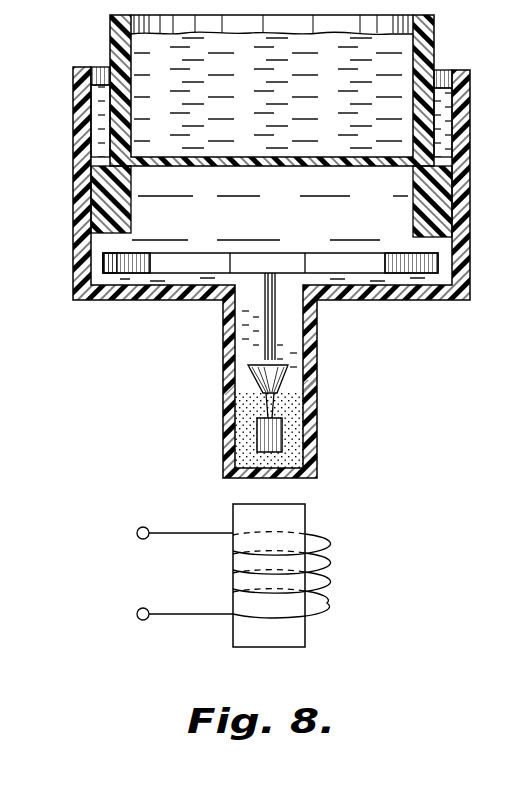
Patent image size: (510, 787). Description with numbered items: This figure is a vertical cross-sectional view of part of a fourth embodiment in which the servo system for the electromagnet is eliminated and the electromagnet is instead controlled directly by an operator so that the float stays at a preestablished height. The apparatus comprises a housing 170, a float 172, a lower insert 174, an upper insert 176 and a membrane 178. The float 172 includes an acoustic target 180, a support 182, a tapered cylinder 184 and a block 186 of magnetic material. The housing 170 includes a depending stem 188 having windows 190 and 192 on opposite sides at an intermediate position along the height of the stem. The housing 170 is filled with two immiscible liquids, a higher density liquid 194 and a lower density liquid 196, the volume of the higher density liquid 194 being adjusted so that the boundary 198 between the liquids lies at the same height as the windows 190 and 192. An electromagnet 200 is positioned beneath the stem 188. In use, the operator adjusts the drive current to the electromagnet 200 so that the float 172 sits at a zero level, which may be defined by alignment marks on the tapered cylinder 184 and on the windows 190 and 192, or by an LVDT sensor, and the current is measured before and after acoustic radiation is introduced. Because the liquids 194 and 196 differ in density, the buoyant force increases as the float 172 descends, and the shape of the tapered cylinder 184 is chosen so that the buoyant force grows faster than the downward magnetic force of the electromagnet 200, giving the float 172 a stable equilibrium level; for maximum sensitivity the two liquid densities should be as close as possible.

The housing 170 is at (83, 146).
The float 172 is at (104, 263).
The lower insert 174 is at (105, 200).
The upper insert 176 is at (120, 52).
The membrane 178 is at (282, 160).
The acoustic target 180 is at (311, 254).
The support 182 is at (264, 292).
The tapered cylinder 184 is at (256, 380).
The block of magnetic material 186 is at (262, 438).
The stem 188 is at (318, 332).
The window 190 is at (222, 406).
The window 192 is at (318, 405).
The higher density liquid 194 is at (317, 470).
The lower density liquid 196 is at (248, 340).
The boundary 198 is at (296, 379).
The electromagnet 200 is at (340, 599).